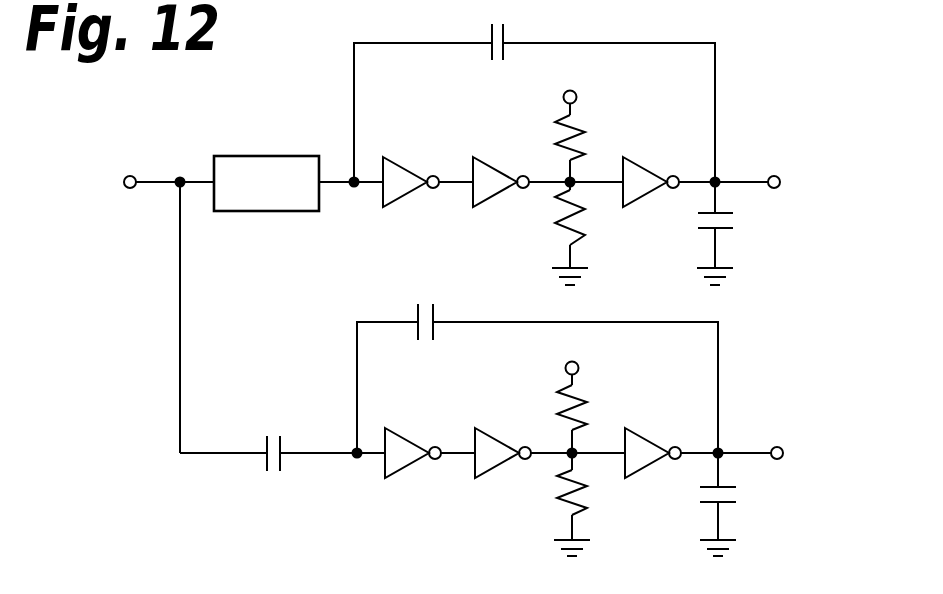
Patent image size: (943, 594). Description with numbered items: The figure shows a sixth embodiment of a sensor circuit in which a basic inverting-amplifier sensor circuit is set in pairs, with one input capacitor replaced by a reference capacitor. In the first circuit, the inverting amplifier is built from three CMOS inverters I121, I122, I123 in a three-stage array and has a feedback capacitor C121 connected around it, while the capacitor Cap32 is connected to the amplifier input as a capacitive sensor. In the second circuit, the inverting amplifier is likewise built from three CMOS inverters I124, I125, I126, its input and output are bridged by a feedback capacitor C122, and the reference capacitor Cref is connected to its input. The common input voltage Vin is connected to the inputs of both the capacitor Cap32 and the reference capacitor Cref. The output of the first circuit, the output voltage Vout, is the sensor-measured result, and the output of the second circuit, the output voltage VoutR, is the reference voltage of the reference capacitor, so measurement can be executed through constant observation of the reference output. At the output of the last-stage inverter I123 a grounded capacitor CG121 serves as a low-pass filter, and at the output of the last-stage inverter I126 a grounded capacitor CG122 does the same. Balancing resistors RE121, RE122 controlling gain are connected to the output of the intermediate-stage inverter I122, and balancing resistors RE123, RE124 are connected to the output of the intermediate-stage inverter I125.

The common input voltage Vin is at (142, 311).
The capacitor Cap32 is at (298, 183).
The feedback capacitor C121 is at (534, 91).
The CMOS inverter I121 is at (427, 168).
The CMOS inverter I122 is at (546, 168).
The CMOS inverter I123 is at (695, 197).
The balancing resistor RE121 is at (603, 123).
The balancing resistor RE122 is at (533, 233).
The output voltage Vout is at (805, 182).
The grounded capacitor CG121 is at (757, 233).
The reference capacitor Cref is at (282, 440).
The feedback capacitor C122 is at (537, 365).
The CMOS inverter I124 is at (429, 439).
The CMOS inverter I125 is at (549, 439).
The CMOS inverter I126 is at (698, 468).
The balancing resistor RE123 is at (605, 394).
The balancing resistor RE124 is at (535, 504).
The output voltage VoutR is at (816, 453).
The grounded capacitor CG122 is at (762, 504).